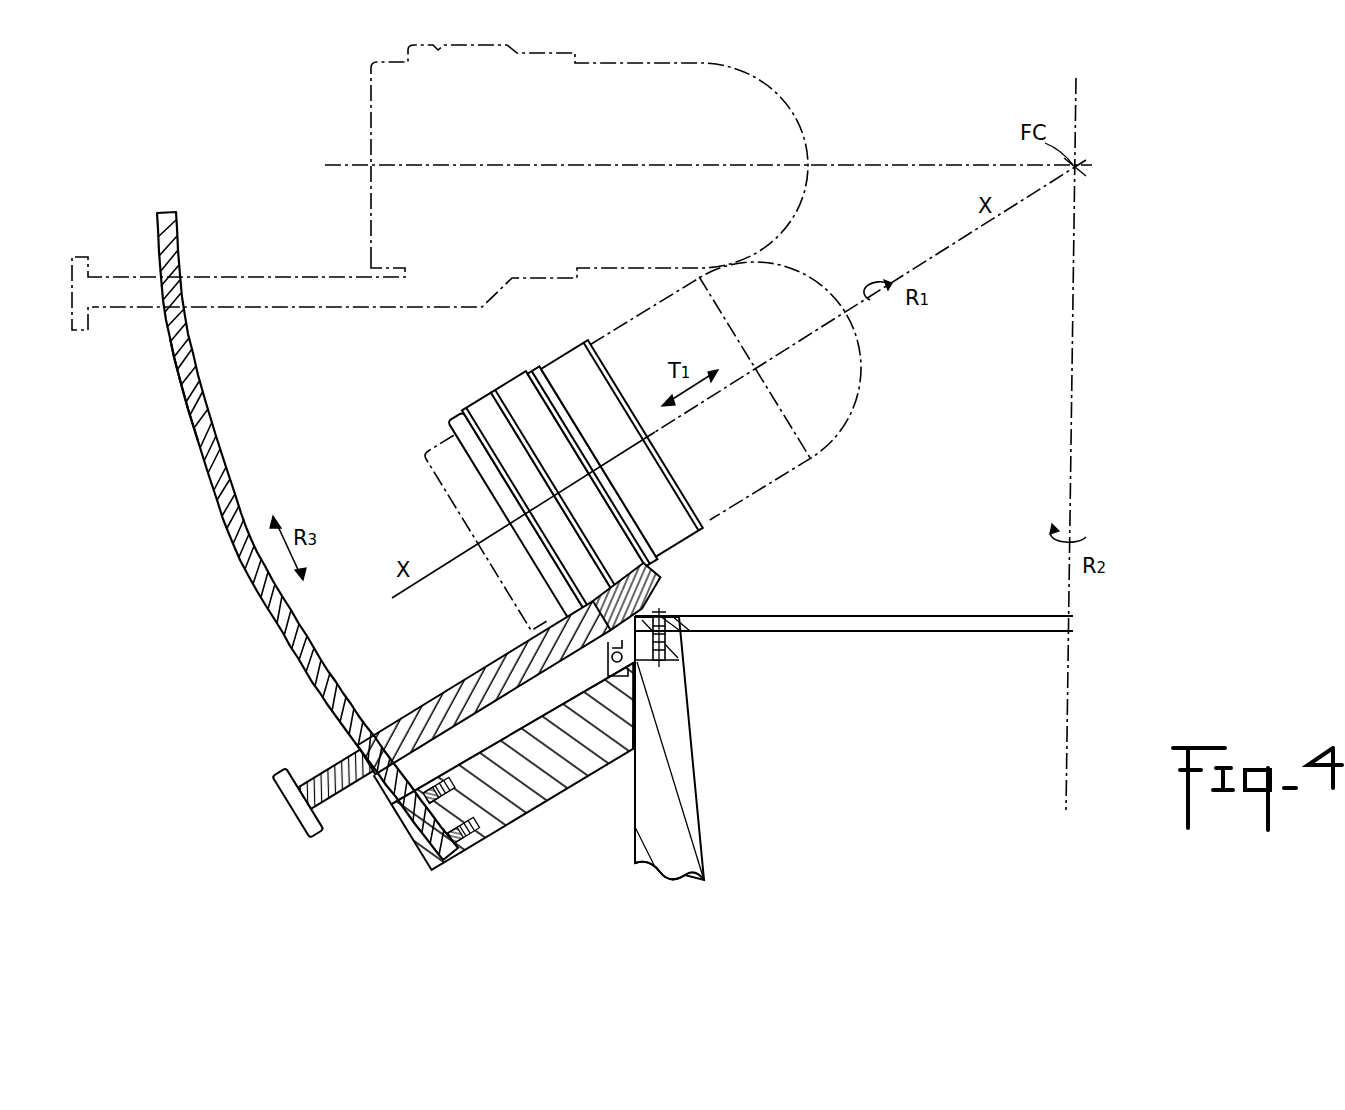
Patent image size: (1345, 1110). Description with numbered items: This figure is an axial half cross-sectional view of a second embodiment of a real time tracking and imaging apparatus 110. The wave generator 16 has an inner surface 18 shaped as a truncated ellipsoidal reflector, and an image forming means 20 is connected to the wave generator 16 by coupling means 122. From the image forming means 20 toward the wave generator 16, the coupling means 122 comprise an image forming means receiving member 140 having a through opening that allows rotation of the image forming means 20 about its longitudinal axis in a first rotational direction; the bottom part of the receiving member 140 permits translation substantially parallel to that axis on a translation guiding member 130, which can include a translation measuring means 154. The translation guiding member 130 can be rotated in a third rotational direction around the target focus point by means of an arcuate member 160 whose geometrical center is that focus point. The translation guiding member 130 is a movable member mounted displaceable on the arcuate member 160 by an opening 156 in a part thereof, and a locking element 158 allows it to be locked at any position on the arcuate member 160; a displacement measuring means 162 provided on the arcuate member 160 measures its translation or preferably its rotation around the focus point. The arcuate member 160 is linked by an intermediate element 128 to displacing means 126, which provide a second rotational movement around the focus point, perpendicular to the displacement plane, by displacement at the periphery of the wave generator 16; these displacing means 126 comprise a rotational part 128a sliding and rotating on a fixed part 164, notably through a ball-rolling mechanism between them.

The image forming means 20 is at (810, 131).
The image forming means receiving member 140 is at (504, 378).
The translation guiding member 130 is at (520, 655).
The coupling means 122 is at (664, 598).
The translation measuring means 154 is at (446, 697).
The intermediate element 128 is at (524, 794).
The displacing means 126 is at (607, 710).
The locking element 158 is at (366, 757).
The opening 156 is at (365, 792).
The inner surface 18 is at (688, 722).
The wave generator 16 is at (677, 848).
The rotational part 128a is at (668, 662).
The fixed part 164 is at (728, 627).
The arcuate member 160 is at (238, 547).
The displacement measuring means 162 is at (178, 392).
The real time tracking and imaging apparatus 110 is at (282, 722).